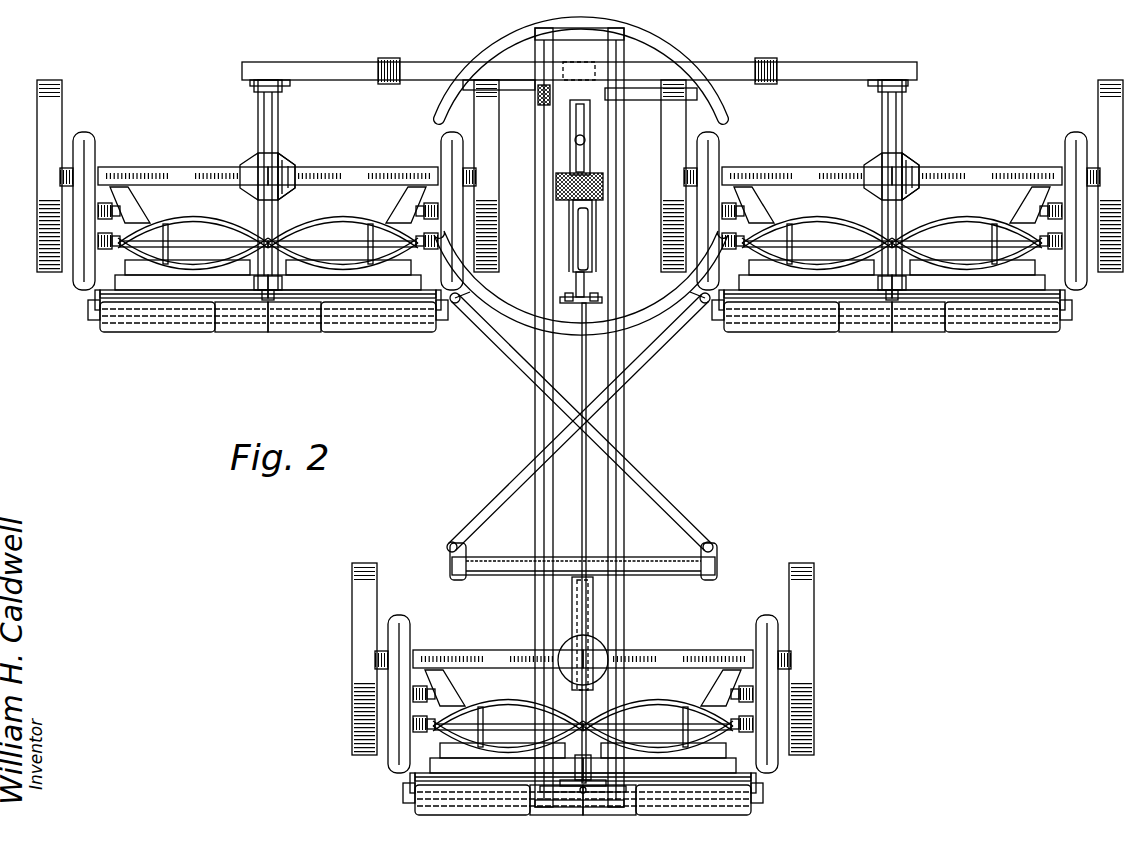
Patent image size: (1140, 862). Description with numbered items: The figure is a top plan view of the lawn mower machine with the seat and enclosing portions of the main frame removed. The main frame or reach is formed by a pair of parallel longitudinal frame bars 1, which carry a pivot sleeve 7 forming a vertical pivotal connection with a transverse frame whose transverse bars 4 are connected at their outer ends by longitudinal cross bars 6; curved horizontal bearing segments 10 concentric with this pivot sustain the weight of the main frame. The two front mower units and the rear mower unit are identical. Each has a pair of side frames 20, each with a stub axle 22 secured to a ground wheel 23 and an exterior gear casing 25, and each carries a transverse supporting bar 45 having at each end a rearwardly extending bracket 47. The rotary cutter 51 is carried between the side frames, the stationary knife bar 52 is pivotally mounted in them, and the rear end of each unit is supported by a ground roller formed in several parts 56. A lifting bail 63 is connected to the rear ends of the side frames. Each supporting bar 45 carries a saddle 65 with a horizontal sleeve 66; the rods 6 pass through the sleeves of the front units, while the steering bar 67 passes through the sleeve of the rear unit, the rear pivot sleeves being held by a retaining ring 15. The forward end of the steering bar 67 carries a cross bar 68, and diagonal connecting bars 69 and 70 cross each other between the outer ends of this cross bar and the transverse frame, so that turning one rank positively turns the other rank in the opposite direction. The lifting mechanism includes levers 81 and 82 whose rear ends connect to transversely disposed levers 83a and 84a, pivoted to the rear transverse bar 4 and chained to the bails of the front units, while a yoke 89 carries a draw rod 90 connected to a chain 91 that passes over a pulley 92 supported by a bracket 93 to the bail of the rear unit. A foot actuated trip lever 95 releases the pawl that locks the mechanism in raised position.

The longitudinal frame bar 1 is at (535, 395).
The transverse bar 4 is at (318, 72).
The cross bar 6 is at (256, 107).
The pivot sleeve 7 is at (590, 165).
The bearing segment 10 is at (650, 45).
The retaining ring 15 is at (608, 637).
The side frame 20 is at (94, 298).
The stub axle 22 is at (66, 175).
The ground wheel 23 is at (46, 228).
The gear casing 25 is at (78, 265).
The transverse supporting bar 45 is at (363, 178).
The bracket 47 is at (128, 210).
The rotary cutter 51 is at (312, 222).
The stationary knife bar 52 is at (215, 288).
The roller part 56 is at (152, 333).
The lifting bail 63 is at (125, 297).
The saddle 65 is at (284, 177).
The horizontal sleeve 66 is at (263, 175).
The steering bar 67 is at (594, 610).
The cross bar 68 is at (640, 565).
The diagonal connecting bar 69 is at (650, 500).
The diagonal connecting bar 70 is at (515, 490).
The lever 81 is at (565, 235).
The lever 82 is at (597, 230).
The transversely disposed lever 83a is at (480, 302).
The transversely disposed lever 84a is at (728, 302).
The yoke 89 is at (578, 258).
The draw rod 90 is at (586, 520).
The chain 91 is at (560, 772).
The pulley 92 is at (606, 778).
The yoke or bracket 93 is at (570, 795).
The foot actuated trip lever 95 is at (538, 95).